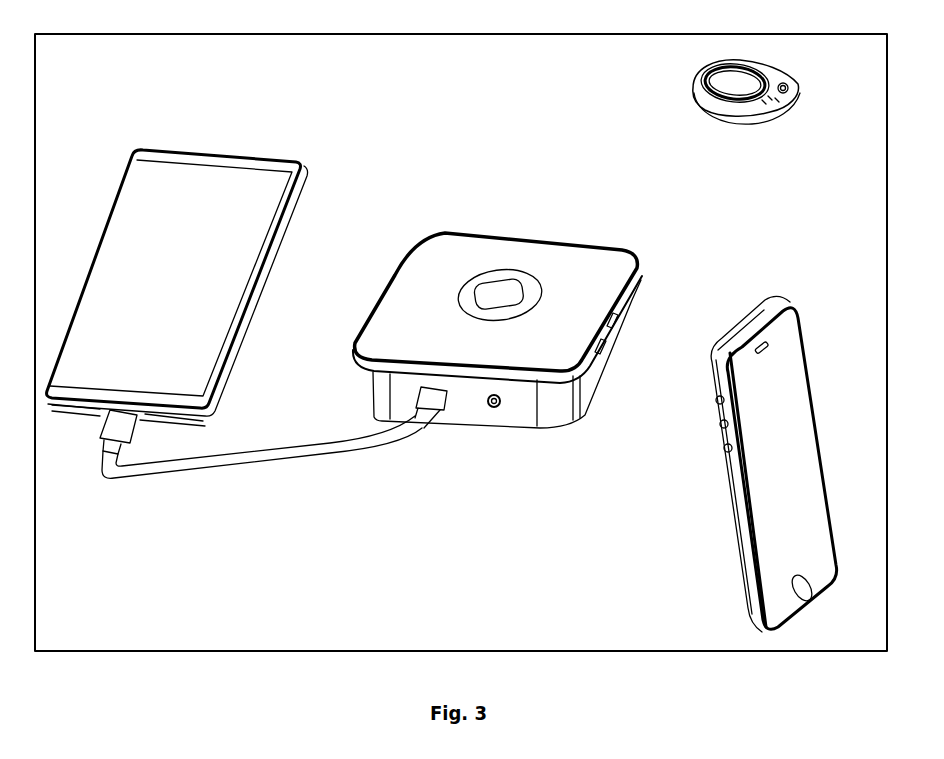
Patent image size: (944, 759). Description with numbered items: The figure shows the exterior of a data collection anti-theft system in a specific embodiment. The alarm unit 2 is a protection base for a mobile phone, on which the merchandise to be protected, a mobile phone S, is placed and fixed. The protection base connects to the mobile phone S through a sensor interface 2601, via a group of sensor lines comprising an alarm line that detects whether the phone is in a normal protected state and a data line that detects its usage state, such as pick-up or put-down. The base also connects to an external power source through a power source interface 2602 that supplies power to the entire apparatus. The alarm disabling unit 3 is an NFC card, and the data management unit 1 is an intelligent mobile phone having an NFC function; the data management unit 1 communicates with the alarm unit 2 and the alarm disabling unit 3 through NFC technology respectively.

The mobile phone S is at (248, 185).
The alarm unit 2 is at (540, 258).
The sensor interface 2601 is at (430, 417).
The power source interface 2602 is at (497, 405).
The alarm disabling unit 3 is at (720, 87).
The data management unit 1 is at (778, 363).